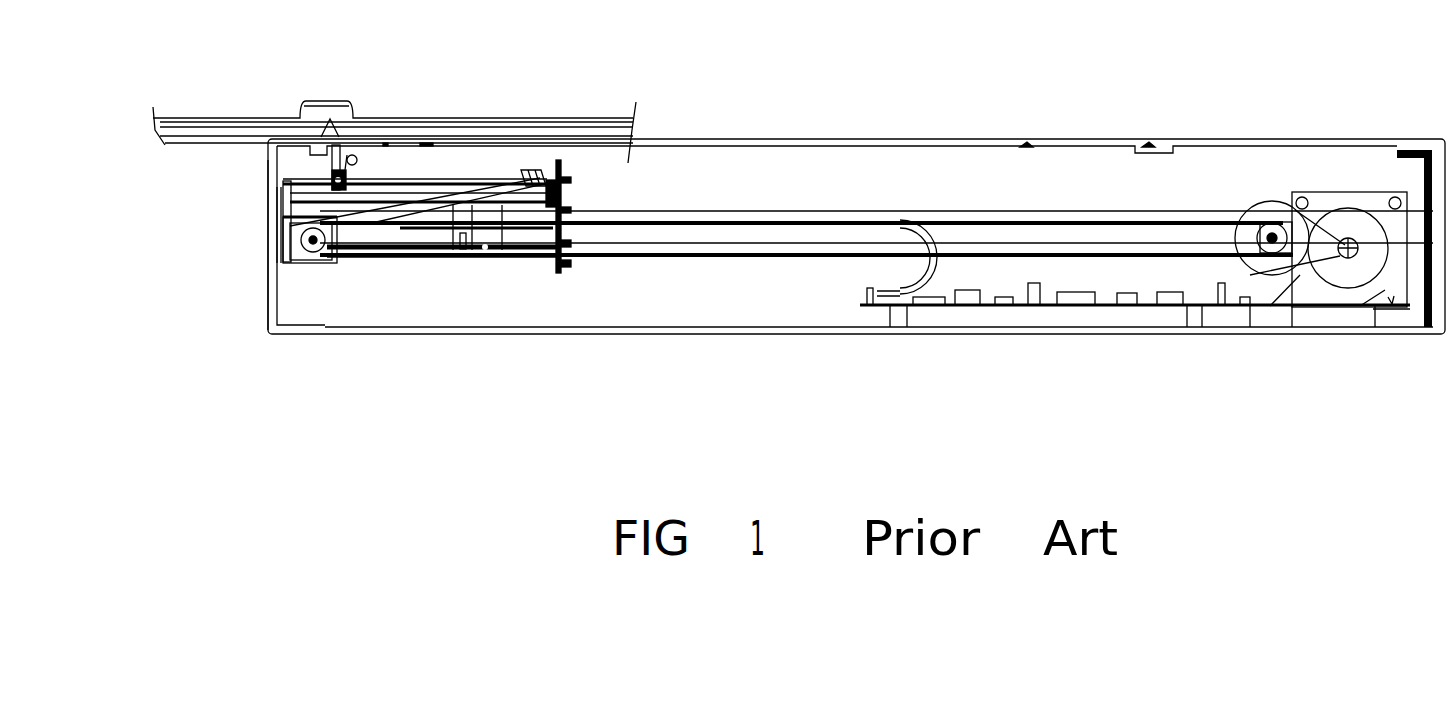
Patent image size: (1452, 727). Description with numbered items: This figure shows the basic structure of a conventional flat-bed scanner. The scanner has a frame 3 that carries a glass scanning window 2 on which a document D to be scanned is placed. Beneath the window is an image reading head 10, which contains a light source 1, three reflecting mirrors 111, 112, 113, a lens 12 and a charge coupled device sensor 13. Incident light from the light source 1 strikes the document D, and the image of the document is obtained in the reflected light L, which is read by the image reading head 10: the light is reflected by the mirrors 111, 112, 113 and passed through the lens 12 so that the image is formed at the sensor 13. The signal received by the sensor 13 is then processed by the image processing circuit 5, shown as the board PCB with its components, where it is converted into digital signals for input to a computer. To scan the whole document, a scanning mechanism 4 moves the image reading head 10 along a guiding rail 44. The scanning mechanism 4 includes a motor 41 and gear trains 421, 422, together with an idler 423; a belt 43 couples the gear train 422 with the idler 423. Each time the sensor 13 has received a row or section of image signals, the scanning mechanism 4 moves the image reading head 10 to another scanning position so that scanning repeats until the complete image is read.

The light source 1 is at (352, 160).
The glass scanning window 2 is at (447, 143).
The frame 3 is at (274, 200).
The scanning mechanism 4 is at (1355, 195).
The image processing circuit 5 is at (1075, 298).
The image reading head 10 is at (371, 255).
The lens 12 is at (461, 232).
The charge coupled device (CCD) sensor 13 is at (553, 262).
The motor 41 is at (1373, 300).
The belt 43 is at (742, 253).
The guiding rail 44 is at (682, 235).
The reflecting mirror 111 is at (337, 150).
The reflecting mirror 112 is at (537, 173).
The reflecting mirror 113 is at (323, 264).
The gear train 421 is at (1348, 262).
The gear train 422 is at (1257, 270).
The idler 423 is at (267, 255).
The document D is at (497, 118).
The reflected light L is at (403, 177).
The printed circuit board PCB is at (1022, 298).